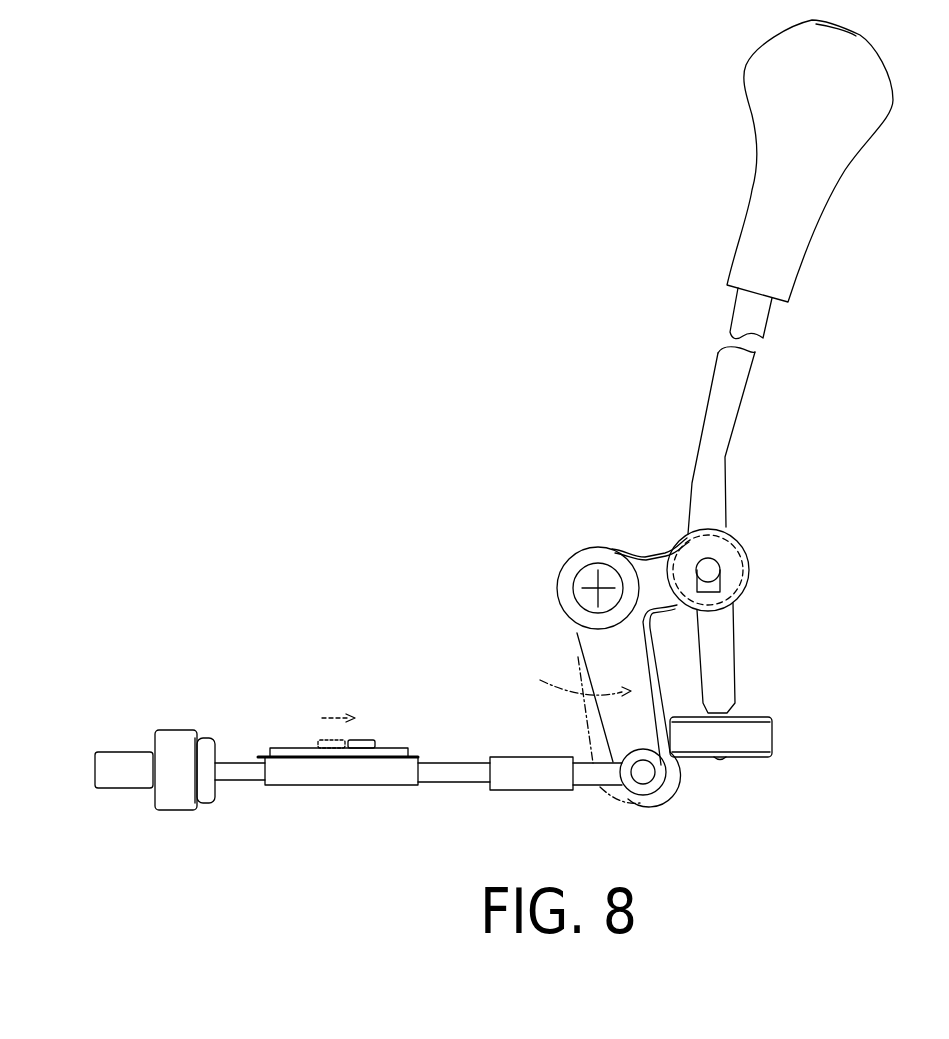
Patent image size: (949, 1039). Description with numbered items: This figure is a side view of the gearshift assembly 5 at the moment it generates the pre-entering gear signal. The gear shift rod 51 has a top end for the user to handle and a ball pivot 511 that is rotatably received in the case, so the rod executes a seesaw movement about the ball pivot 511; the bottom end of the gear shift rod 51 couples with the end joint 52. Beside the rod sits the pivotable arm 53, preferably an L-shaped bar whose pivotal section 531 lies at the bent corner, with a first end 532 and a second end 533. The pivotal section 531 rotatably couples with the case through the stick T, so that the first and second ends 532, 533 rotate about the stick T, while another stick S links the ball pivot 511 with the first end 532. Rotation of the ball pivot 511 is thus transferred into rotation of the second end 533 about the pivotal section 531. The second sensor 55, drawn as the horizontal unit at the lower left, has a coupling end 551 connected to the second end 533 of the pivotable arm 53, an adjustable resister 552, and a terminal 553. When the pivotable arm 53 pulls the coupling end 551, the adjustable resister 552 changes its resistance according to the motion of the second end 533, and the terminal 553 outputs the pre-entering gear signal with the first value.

The gearshift assembly 5 is at (723, 130).
The gear shift rod 51 is at (730, 412).
The ball pivot 511 is at (748, 547).
The stick S is at (720, 577).
The first end 532 is at (687, 543).
The pivotal section 531 is at (603, 548).
The stick T is at (588, 578).
The pivotable arm 53 is at (607, 667).
The second end 533 is at (672, 772).
The end joint 52 is at (762, 738).
The second sensor 55 is at (293, 770).
The adjustable resister 552 is at (358, 736).
The coupling end 551 is at (510, 777).
The terminal 553 is at (173, 797).